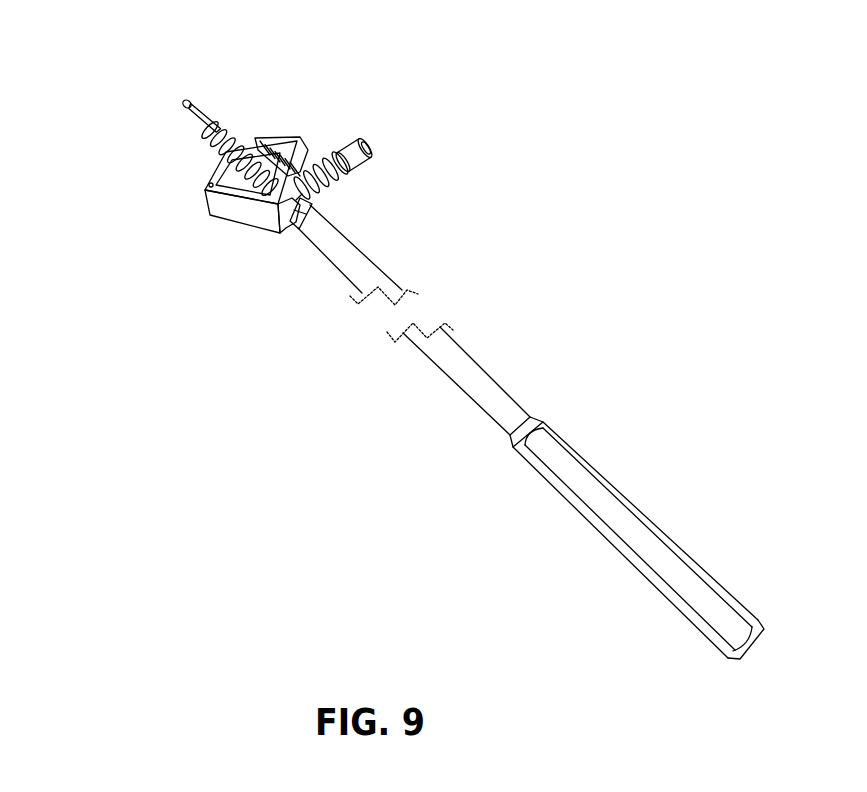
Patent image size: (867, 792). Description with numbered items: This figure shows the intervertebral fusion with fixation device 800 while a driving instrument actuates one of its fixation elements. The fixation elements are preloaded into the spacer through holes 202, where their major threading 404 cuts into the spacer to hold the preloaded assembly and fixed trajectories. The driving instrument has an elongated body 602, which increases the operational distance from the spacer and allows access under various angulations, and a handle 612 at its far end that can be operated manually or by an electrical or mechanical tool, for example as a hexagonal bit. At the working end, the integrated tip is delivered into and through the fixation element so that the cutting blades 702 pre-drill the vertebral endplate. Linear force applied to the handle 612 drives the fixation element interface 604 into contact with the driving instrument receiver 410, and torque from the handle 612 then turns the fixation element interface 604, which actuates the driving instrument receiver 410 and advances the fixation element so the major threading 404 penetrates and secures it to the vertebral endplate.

The intervertebral fusion with fixation device 800 is at (409, 330).
The cutting blades 702 is at (129, 99).
The major threading 404 is at (182, 185).
The holes 202 is at (341, 141).
The driving instrument receiver 410 is at (399, 141).
The body 602 is at (420, 314).
The fixation element interface 604 is at (211, 273).
The handle 612 is at (647, 540).